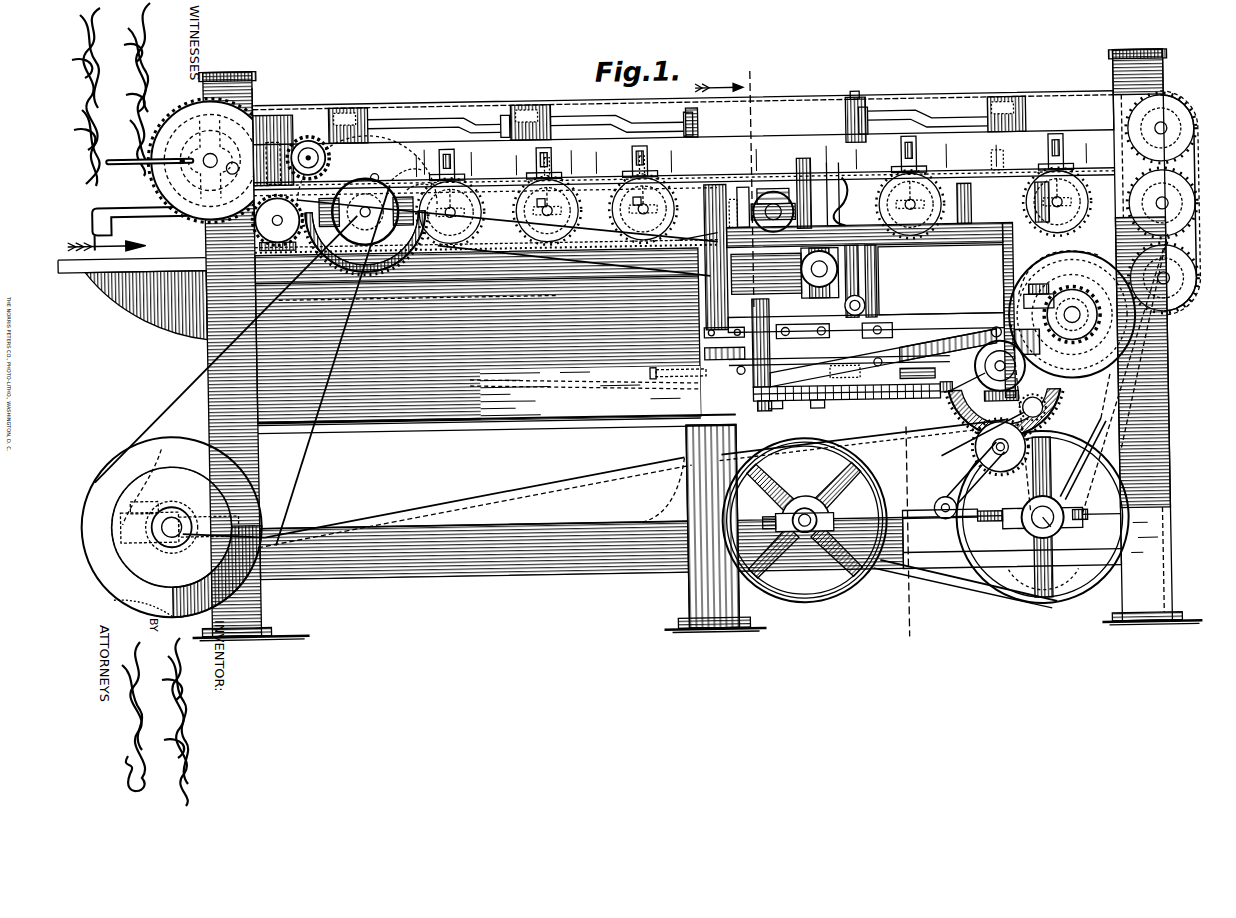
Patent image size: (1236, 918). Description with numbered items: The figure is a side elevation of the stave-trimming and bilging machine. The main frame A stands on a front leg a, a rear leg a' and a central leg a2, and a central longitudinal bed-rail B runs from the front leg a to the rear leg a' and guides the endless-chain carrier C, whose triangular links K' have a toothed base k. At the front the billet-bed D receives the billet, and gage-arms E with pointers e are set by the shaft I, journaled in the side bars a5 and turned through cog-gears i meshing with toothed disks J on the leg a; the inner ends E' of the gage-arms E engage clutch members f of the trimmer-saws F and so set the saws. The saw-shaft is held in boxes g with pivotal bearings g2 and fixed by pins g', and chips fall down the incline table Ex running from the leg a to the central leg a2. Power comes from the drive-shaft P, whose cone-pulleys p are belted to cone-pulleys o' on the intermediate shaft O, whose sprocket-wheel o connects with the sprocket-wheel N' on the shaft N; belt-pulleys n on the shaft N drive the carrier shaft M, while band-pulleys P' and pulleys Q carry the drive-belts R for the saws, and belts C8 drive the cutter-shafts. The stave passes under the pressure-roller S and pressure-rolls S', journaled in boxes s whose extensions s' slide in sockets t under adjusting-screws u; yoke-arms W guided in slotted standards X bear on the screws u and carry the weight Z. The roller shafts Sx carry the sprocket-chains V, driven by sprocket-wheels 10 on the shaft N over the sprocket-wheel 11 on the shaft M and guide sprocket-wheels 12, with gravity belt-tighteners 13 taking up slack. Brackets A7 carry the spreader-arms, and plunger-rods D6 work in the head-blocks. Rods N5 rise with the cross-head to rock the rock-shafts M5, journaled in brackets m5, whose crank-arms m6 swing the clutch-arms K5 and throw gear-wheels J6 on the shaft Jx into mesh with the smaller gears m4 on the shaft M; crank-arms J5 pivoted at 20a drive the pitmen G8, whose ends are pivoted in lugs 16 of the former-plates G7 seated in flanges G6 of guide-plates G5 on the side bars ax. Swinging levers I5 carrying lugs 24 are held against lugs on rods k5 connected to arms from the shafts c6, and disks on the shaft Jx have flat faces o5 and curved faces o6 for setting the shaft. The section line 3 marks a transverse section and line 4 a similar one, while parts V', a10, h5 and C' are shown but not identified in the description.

The main frame A is at (690, 528).
The front leg a is at (246, 356).
The rear leg a' is at (1147, 336).
The central leg a2 is at (704, 528).
The endless sprocket-chains V is at (737, 203).
The table V' is at (683, 145).
The weight Z is at (677, 109).
The yoke-arms W is at (530, 121).
The pipe a10 is at (923, 115).
The slotted standards X is at (692, 124).
The rods N5 is at (868, 98).
The sockets t is at (497, 156).
The adjusting-screws u is at (642, 158).
The brackets m5 is at (899, 153).
The crank-arms m6 is at (993, 198).
The yielding pressure-roller S is at (761, 207).
The boxes s is at (589, 205).
The vertical extensions s' is at (603, 162).
The yielding pressure-rolls S' is at (486, 220).
The shaft C' is at (486, 222).
The belts C8 is at (697, 225).
The longitudinal side bars a5 is at (792, 255).
The gage-arms E is at (414, 306).
The incline table Ex is at (478, 407).
The central longitudinal bed-rail B is at (574, 261).
The fingers or pointers e is at (108, 236).
The billet-bed D is at (133, 291).
The drive-belts R is at (437, 504).
The drive-shaft P is at (171, 527).
The band-pulleys P' is at (168, 518).
The cone-pulleys p is at (172, 530).
The pulleys Q is at (266, 342).
The pins g' is at (383, 156).
The boxes g is at (406, 162).
The adjustable pivotal bearings g2 is at (419, 175).
The shaft I is at (306, 140).
The guide sprocket-wheels 12 is at (176, 140).
The toothed disks J is at (640, 274).
The cog-gears i is at (314, 140).
The roller shafts Sx is at (280, 223).
The trimmer-saws F is at (772, 190).
The clutch members f is at (822, 181).
The post h5 is at (742, 207).
The bracket A7 is at (1003, 201).
The swinging clutch-arms K5 is at (865, 250).
The inner ends of gage-arms E' is at (807, 273).
The rock-shafts M5 is at (905, 280).
The plunger-rods D6 is at (941, 280).
The swinging levers I5 is at (886, 354).
The lugs 24 is at (866, 344).
The longitudinal side bars ax is at (849, 337).
The pivot 20a is at (985, 311).
The base of links k is at (847, 401).
The rods k5 is at (760, 408).
The triangular links K' is at (912, 391).
The endless-chain carrier C is at (845, 394).
The guide-plates G5 is at (716, 333).
The horizontal flanges G6 is at (716, 353).
The apertured lugs 16 is at (700, 362).
The shafts c6 is at (586, 389).
The former-plates G7 is at (785, 400).
The pitmen G8 is at (823, 399).
The crank-arms J5 is at (938, 393).
The gear-wheels J6 is at (960, 395).
The transverse shaft Jx is at (1060, 398).
The curved faces o6 is at (1039, 407).
The transverse shaft M is at (1072, 314).
The smaller gears m4 is at (1085, 305).
The sprocket-wheel 11 is at (1070, 294).
The intermediate shaft O is at (805, 500).
The sprocket-wheel o is at (809, 514).
The cone-pulleys o' is at (888, 518).
The transverse shaft N is at (1042, 517).
The sprocket-wheel N' is at (1046, 576).
The belt-pulleys n is at (1022, 535).
The sprocket-wheels 10 is at (1058, 500).
The flat faces o5 is at (985, 457).
The gravity belt-tighteners 13 is at (985, 472).
The section line 3 is at (806, 360).
The section line 4 is at (733, 213).